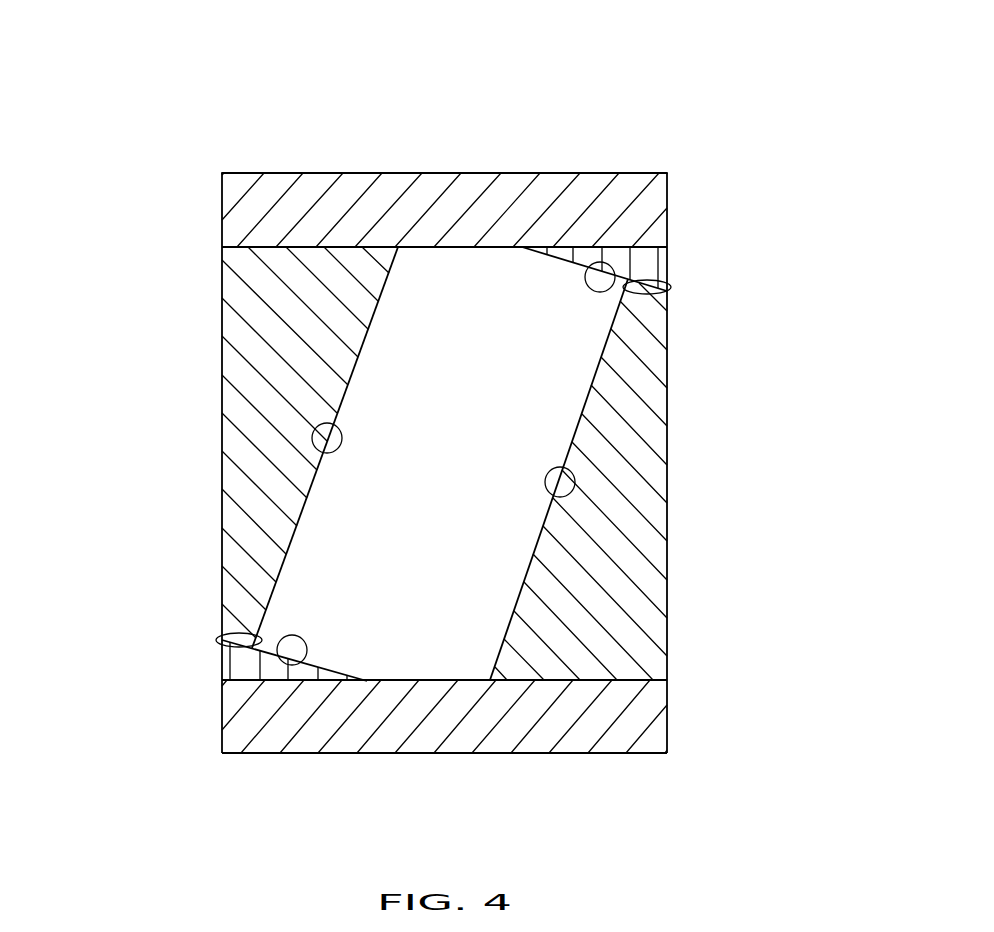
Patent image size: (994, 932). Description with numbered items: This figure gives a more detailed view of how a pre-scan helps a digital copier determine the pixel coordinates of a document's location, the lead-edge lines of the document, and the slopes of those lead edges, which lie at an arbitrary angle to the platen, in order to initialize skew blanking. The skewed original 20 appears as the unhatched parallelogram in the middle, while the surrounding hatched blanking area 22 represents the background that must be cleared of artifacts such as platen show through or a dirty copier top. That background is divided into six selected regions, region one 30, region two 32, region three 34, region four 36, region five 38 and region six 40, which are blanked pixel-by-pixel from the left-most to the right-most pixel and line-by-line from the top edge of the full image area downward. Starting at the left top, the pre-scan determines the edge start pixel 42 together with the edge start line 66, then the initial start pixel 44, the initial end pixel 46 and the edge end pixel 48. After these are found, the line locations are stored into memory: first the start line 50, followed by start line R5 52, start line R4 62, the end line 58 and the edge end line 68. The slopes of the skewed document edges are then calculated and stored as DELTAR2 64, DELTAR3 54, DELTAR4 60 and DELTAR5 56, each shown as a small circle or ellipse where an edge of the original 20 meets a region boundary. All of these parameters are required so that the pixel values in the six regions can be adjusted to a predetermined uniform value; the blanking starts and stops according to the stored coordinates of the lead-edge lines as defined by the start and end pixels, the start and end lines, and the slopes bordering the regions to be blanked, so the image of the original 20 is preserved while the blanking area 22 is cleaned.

The original 20 is at (572, 350).
The blanking area 22 is at (632, 415).
The region 1 30 is at (467, 232).
The region 2 32 is at (347, 362).
The region 3 34 is at (568, 255).
The region 4 36 is at (332, 676).
The region 5 38 is at (578, 578).
The region 6 40 is at (427, 707).
The edge start pixel 42 is at (222, 162).
The initial start pixel 44 is at (398, 236).
The initial end pixel 46 is at (523, 236).
The edge end pixel 48 is at (667, 162).
The start line 50 is at (676, 247).
The start line R5 52 is at (682, 287).
The DELTAR3 54 is at (613, 269).
The DELTAR5 56 is at (574, 486).
The end line 58 is at (676, 680).
The DELTAR4 60 is at (283, 661).
The start line R4 62 is at (206, 640).
The DELTAR2 64 is at (312, 438).
The edge start line 66 is at (214, 173).
The edge end line 68 is at (676, 752).